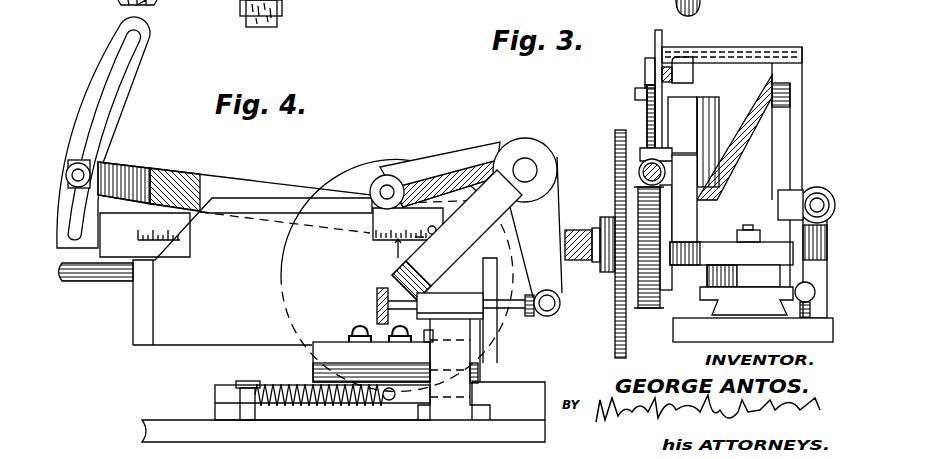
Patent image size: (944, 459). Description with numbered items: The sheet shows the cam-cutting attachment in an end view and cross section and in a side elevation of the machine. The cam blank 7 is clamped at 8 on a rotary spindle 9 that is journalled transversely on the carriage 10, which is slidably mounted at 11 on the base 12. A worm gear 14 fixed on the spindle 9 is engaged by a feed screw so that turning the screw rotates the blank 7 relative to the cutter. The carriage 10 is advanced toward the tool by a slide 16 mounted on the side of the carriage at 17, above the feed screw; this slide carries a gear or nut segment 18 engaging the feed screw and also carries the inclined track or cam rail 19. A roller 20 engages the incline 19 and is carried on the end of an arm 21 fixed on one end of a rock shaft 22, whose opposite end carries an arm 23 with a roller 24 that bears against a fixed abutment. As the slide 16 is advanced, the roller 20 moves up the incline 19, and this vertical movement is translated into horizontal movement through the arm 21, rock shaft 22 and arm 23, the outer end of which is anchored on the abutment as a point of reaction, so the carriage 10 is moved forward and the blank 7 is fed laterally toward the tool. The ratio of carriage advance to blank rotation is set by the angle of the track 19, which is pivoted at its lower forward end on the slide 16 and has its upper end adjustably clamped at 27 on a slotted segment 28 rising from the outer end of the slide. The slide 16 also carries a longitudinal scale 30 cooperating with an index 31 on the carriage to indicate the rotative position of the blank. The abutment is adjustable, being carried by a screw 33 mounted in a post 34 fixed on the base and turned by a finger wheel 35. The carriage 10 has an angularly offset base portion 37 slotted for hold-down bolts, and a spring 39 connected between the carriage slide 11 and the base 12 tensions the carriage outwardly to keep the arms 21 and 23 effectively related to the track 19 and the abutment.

In FIG. 4, the cam blank 7 is at (386, 162).
In FIG. 3, the cam blank 7 is at (615, 150).
In FIG. 3, the clamp 8 is at (606, 222).
In FIG. 4, the rotary spindle 9 is at (282, 25).
In FIG. 3, the rotary spindle 9 is at (572, 232).
In FIG. 4, the carriage 10 is at (188, 336).
In FIG. 3, the carriage 10 is at (690, 216).
In FIG. 4, the carriage slide 11 is at (215, 392).
In FIG. 3, the carriage slide 11 is at (710, 294).
In FIG. 4, the base 12 is at (157, 430).
In FIG. 3, the base 12 is at (725, 334).
In FIG. 3, the worm gear 14 is at (652, 312).
In FIG. 4, the slide 16 is at (120, 270).
In FIG. 3, the slide 16 is at (676, 122).
In FIG. 3, the slide mounting 17 is at (676, 161).
In FIG. 3, the gear or nut segment 18 is at (640, 168).
In FIG. 4, the inclined track or cam rail 19 is at (180, 185).
In FIG. 3, the inclined track or cam rail 19 is at (620, 116).
In FIG. 4, the roller 20 is at (370, 190).
In FIG. 3, the roller 20 is at (617, 96).
In FIG. 4, the arm 21 is at (463, 160).
In FIG. 3, the arm 21 is at (680, 72).
In FIG. 4, the rock shaft 22 is at (525, 157).
In FIG. 4, the arm 23 is at (553, 166).
In FIG. 3, the arm 23 is at (800, 147).
In FIG. 4, the roller 24 is at (553, 315).
In FIG. 3, the roller 24 is at (818, 188).
In FIG. 4, the adjustable clamp 27 is at (90, 168).
In FIG. 3, the adjustable clamp 27 is at (645, 72).
In FIG. 4, the slotted segment 28 is at (126, 88).
In FIG. 3, the slotted segment 28 is at (655, 40).
In FIG. 4, the longitudinal scale 30 is at (178, 230).
In FIG. 4, the index 31 is at (392, 250).
In FIG. 4, the screw 33 is at (528, 317).
In FIG. 4, the post 34 is at (446, 302).
In FIG. 4, the finger wheel 35 is at (377, 297).
In FIG. 3, the finger wheel 35 is at (788, 200).
In FIG. 4, the angularly offset base portion 37 is at (328, 345).
In FIG. 3, the angularly offset base portion 37 is at (726, 250).
In FIG. 4, the spring 39 is at (274, 392).
In FIG. 3, the spring 39 is at (798, 291).